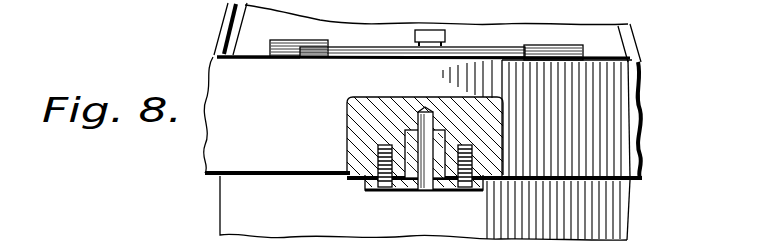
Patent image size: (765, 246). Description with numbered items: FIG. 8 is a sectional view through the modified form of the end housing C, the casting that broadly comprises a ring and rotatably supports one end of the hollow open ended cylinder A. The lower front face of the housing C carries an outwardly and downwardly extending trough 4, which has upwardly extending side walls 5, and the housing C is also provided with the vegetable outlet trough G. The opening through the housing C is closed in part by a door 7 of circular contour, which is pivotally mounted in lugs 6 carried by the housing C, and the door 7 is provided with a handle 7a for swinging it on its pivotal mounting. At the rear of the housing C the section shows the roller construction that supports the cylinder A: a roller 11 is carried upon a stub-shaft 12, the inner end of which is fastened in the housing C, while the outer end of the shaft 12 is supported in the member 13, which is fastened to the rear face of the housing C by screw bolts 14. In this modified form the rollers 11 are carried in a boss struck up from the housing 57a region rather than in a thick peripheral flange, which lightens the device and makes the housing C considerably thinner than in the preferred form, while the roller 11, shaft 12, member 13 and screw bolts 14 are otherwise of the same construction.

The trough 4 is at (298, 35).
The side walls 5 is at (222, 30).
The lugs 6 is at (303, 50).
The door 7 is at (350, 53).
The handle 7a is at (436, 30).
The hatched holder block 57a is at (377, 110).
The rollers 11 is at (403, 190).
The stub-shafts 12 is at (423, 187).
The member 13 is at (390, 190).
The screw bolts 14 is at (363, 178).
The hollow open ended cylinder A is at (425, 208).
The end housing C is at (277, 115).
The vegetable outlet trough G is at (602, 43).